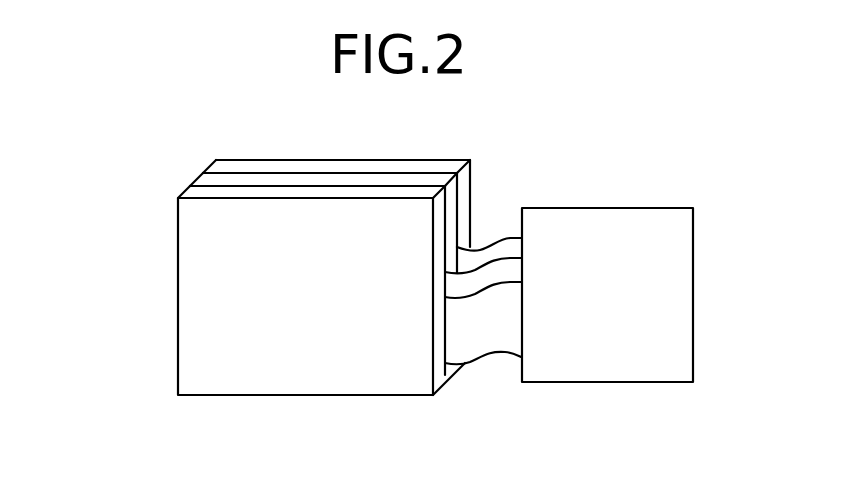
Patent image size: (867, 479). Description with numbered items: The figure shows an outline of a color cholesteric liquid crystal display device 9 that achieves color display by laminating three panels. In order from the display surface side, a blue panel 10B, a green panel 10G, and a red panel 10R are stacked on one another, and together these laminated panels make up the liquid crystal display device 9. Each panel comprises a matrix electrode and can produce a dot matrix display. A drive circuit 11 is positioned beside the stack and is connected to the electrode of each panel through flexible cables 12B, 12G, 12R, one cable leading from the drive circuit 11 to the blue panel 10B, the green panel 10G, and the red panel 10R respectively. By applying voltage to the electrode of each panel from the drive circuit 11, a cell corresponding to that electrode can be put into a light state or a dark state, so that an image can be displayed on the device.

The liquid crystal display device 9 is at (260, 244).
The red panel 10R is at (212, 163).
The green panel 10G is at (205, 177).
The blue panel 10B is at (186, 193).
The drive circuit 11 is at (693, 328).
The flexible cable 12R is at (505, 238).
The flexible cable 12G is at (484, 246).
The flexible cable 12B is at (473, 364).